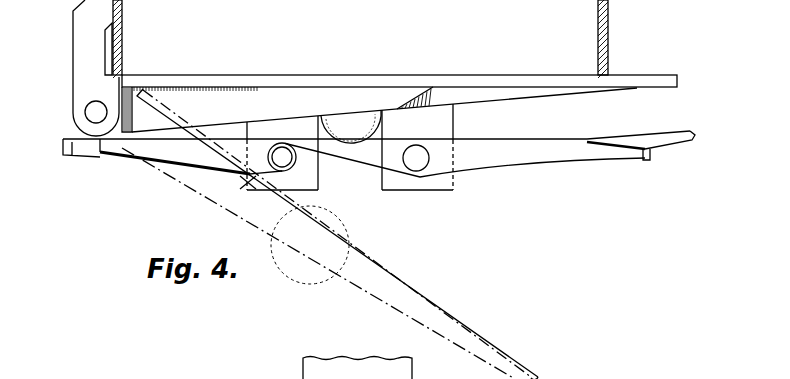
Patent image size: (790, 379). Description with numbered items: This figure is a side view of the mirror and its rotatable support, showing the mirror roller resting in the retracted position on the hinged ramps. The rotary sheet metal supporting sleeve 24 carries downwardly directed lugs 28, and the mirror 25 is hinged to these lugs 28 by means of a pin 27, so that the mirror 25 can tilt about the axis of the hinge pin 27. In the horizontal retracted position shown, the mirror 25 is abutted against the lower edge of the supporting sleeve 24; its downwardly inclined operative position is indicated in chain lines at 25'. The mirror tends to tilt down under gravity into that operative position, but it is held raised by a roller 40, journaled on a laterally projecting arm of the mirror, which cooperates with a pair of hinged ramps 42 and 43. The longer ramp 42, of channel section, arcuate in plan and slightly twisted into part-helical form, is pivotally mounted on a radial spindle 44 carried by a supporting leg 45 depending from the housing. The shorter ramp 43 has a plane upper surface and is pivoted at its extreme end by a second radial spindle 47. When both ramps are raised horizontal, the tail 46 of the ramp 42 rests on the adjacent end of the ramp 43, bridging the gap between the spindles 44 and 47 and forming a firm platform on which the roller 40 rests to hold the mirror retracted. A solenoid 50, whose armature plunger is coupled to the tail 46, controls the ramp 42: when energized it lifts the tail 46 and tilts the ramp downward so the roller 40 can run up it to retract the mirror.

The supporting sleeve 24 is at (608, 33).
The mirror 25 is at (399, 89).
The mirror in operative position 25' is at (330, 234).
The hinge pin 27 is at (94, 113).
The lugs 28 is at (80, 72).
The roller 40 is at (336, 126).
The ramp 42 is at (567, 146).
The ramp 43 is at (130, 150).
The spindle 44 is at (416, 162).
The supporting leg 45 is at (462, 178).
The tail 46 is at (364, 152).
The second radial spindle 47 is at (247, 182).
The solenoid 50 is at (303, 377).